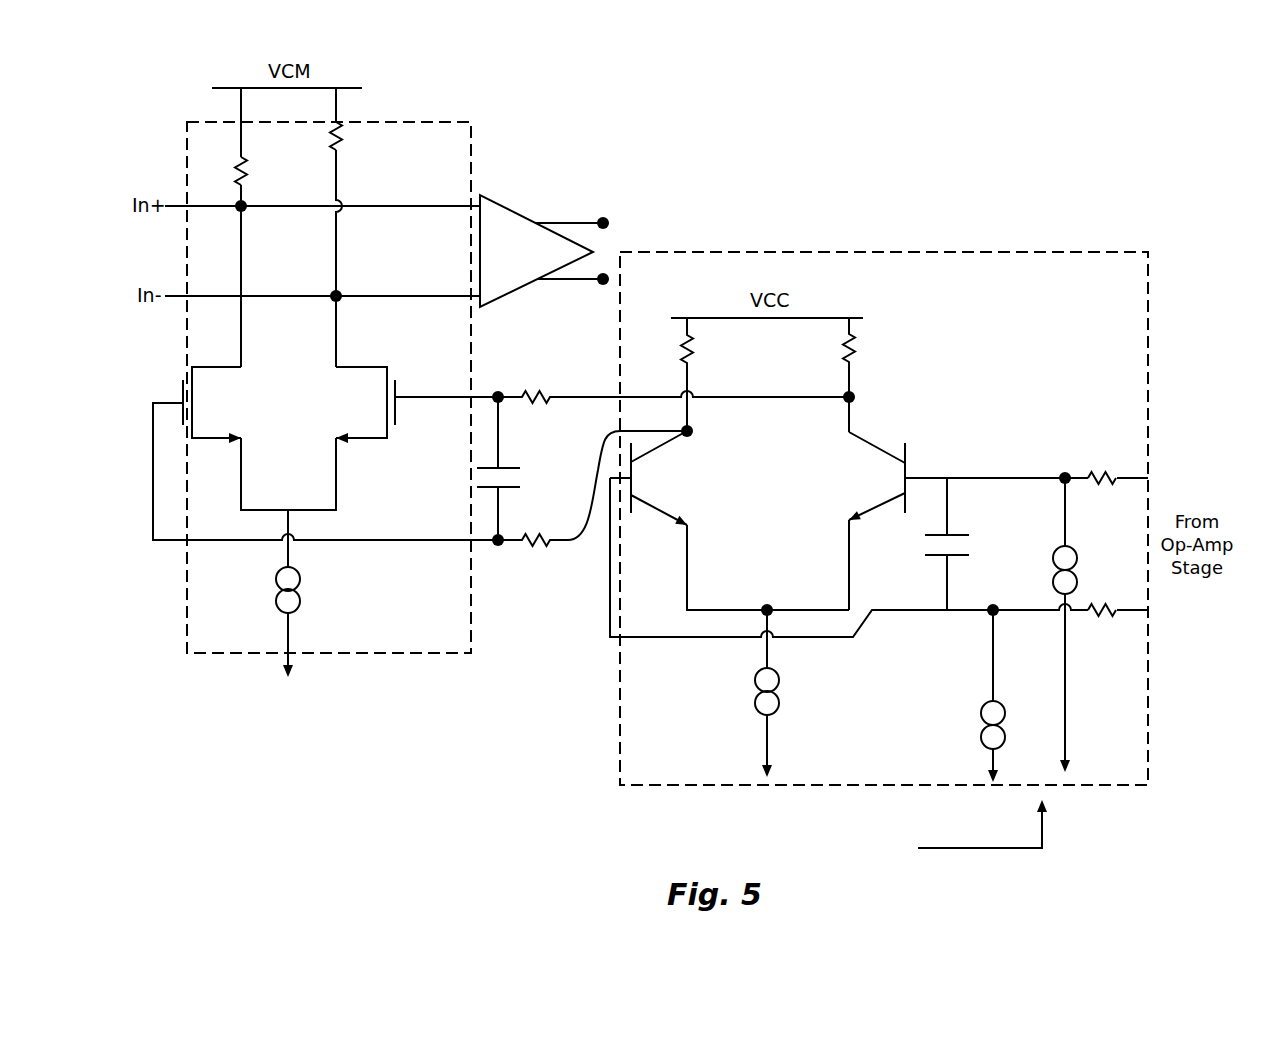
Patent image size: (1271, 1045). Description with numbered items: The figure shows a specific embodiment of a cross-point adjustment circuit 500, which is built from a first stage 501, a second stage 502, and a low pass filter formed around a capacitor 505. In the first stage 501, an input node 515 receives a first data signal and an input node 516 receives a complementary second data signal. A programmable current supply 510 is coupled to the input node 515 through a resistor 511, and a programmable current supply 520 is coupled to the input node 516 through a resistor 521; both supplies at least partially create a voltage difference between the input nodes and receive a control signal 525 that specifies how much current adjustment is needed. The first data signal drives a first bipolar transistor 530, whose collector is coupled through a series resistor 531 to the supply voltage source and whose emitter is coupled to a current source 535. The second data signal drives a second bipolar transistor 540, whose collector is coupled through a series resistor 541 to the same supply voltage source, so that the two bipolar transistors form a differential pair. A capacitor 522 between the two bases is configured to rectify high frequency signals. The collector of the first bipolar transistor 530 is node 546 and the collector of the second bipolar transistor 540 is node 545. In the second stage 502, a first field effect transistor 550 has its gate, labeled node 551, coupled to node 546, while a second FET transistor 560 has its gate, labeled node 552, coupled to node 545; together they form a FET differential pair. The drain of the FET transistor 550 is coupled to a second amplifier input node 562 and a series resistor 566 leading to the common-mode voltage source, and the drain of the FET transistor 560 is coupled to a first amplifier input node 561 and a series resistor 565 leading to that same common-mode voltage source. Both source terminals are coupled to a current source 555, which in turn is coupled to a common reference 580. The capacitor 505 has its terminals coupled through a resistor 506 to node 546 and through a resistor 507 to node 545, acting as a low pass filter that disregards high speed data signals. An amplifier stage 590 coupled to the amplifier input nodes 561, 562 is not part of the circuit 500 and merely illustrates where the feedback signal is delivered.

The cross-point adjustment circuit 500 is at (716, 120).
The first stage 501 is at (965, 252).
The second stage 502 is at (430, 122).
The capacitor 505 is at (518, 468).
The resistor 506 is at (535, 390).
The resistor 507 is at (533, 545).
The programmable current supply 510 is at (1078, 575).
The resistor 511 is at (1097, 468).
The input node 515 is at (1148, 478).
The input node 516 is at (1148, 610).
The programmable current supply 520 is at (1006, 735).
The resistor 521 is at (1100, 620).
The capacitor 522 is at (962, 535).
The control signal 525 is at (982, 851).
The first bipolar transistor 530 is at (910, 452).
The series resistor 531 is at (860, 348).
The current source 535 is at (780, 700).
The second bipolar transistor 540 is at (660, 470).
The series resistor 541 is at (697, 350).
The node 545 is at (687, 431).
The node 546 is at (857, 397).
The first field effect transistor 550 is at (408, 355).
The node 551 is at (400, 398).
The node 552 is at (170, 402).
The current source 555 is at (300, 600).
The second FET transistor 560 is at (155, 352).
The first amplifier input node 561 is at (245, 211).
The second amplifier input node 562 is at (342, 294).
The series resistor 565 is at (247, 171).
The series resistor 566 is at (342, 135).
The common reference 580 is at (292, 676).
The amplifier stage 590 is at (541, 262).